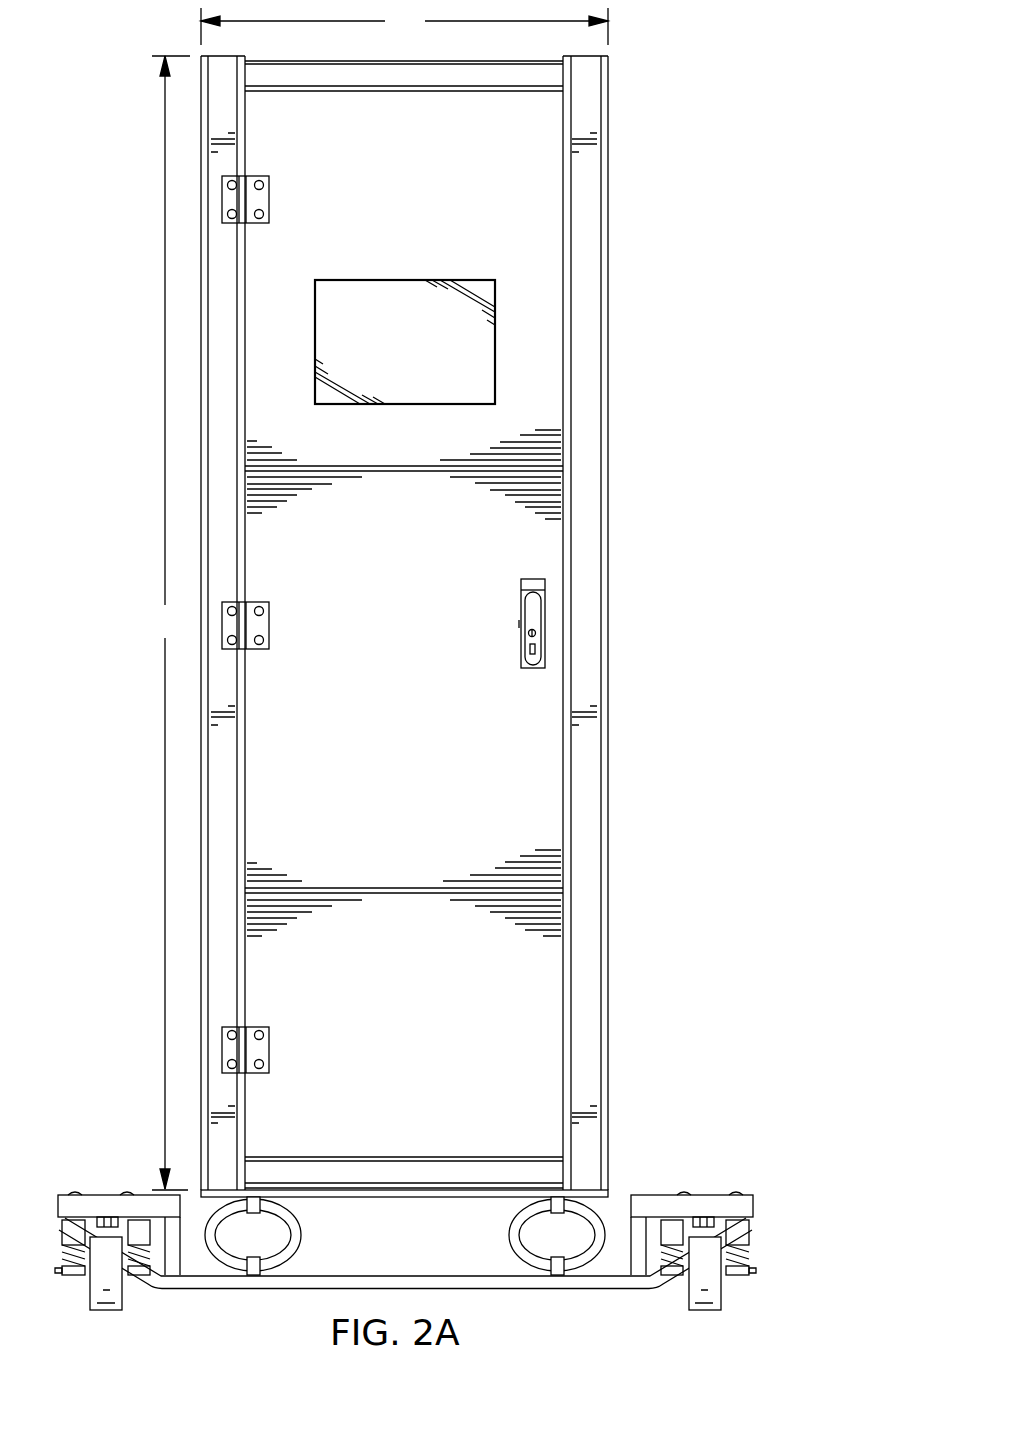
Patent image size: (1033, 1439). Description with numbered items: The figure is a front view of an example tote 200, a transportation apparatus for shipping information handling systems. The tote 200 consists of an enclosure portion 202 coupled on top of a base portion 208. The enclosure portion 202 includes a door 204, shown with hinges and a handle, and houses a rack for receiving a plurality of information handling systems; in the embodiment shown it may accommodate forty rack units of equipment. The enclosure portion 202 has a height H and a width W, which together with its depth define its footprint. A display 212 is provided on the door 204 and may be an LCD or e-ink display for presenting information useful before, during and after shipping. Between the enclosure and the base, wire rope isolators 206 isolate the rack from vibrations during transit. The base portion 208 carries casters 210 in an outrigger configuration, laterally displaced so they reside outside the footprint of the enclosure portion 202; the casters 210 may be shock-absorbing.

The tote 200 is at (94, 97).
The enclosure portion 202 is at (610, 215).
The door 204 is at (548, 372).
The isolators 206 is at (302, 1235).
The base portion 208 is at (212, 1292).
The casters 210 is at (103, 1310).
The display 212 is at (427, 358).